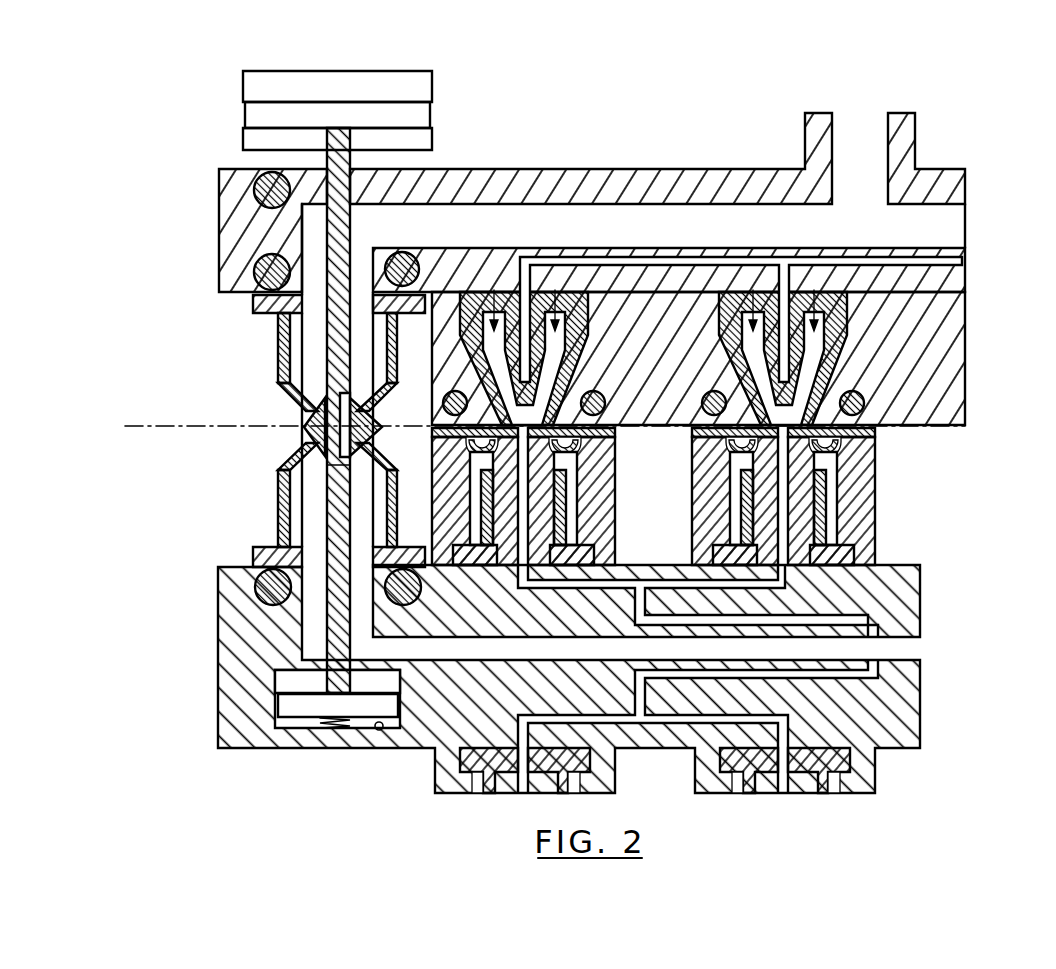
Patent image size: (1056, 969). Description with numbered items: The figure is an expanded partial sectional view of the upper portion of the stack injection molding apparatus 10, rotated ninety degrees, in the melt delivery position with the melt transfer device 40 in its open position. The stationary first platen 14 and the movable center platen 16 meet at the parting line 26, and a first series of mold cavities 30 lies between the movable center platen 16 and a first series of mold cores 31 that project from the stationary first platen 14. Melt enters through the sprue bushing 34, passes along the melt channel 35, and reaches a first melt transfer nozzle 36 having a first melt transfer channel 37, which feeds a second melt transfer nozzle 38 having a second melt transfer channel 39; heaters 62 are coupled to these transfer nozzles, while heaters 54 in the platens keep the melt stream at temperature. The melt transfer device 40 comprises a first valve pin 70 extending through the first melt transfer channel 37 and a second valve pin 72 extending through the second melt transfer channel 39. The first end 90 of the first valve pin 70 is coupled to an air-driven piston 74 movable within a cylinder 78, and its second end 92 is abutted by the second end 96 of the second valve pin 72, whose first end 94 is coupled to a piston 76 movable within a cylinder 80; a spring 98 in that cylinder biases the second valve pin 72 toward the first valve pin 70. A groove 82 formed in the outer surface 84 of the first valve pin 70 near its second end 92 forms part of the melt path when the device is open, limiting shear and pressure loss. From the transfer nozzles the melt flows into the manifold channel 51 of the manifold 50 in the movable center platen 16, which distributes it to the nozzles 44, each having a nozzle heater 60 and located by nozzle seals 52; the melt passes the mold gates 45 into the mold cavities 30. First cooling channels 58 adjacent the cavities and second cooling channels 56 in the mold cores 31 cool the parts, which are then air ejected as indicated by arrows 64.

The stack injection molding apparatus 10 is at (172, 132).
The stationary first platen 14 is at (240, 212).
The movable center platen 16 is at (250, 640).
The parting line 26 is at (128, 425).
The first series of mold cavities 30 is at (810, 367).
The first series of mold cores 31 is at (820, 322).
The sprue bushing 34 is at (917, 135).
The melt channel 35 is at (432, 234).
The first melt transfer nozzle 36 is at (280, 346).
The first melt transfer channel 37 is at (255, 296).
The second melt transfer nozzle 38 is at (278, 523).
The second melt transfer channel 39 is at (358, 608).
The melt transfer device 40 is at (208, 447).
The nozzles 44 is at (803, 532).
The mold gates 45 is at (875, 448).
The manifold 50 is at (893, 690).
The manifold channel 51 is at (860, 648).
The nozzle seals 52 is at (583, 452).
The heaters 54 is at (222, 268).
The second cooling channels 56 is at (793, 345).
The first cooling channels 58 is at (862, 403).
The nozzle heater 60 is at (830, 487).
The heaters 62 is at (280, 495).
The arrows 64 is at (905, 265).
The first valve pin 70 is at (280, 360).
The second valve pin 72 is at (262, 560).
The piston 74 is at (417, 98).
The piston 76 is at (298, 717).
The cylinder 78 is at (430, 137).
The cylinder 80 is at (380, 731).
The groove 82 is at (290, 392).
The outer surface 84 is at (278, 415).
The first end 90 is at (352, 156).
The second end 92 is at (380, 427).
The first end 94 is at (275, 688).
The second end 96 is at (285, 452).
The spring 98 is at (340, 730).